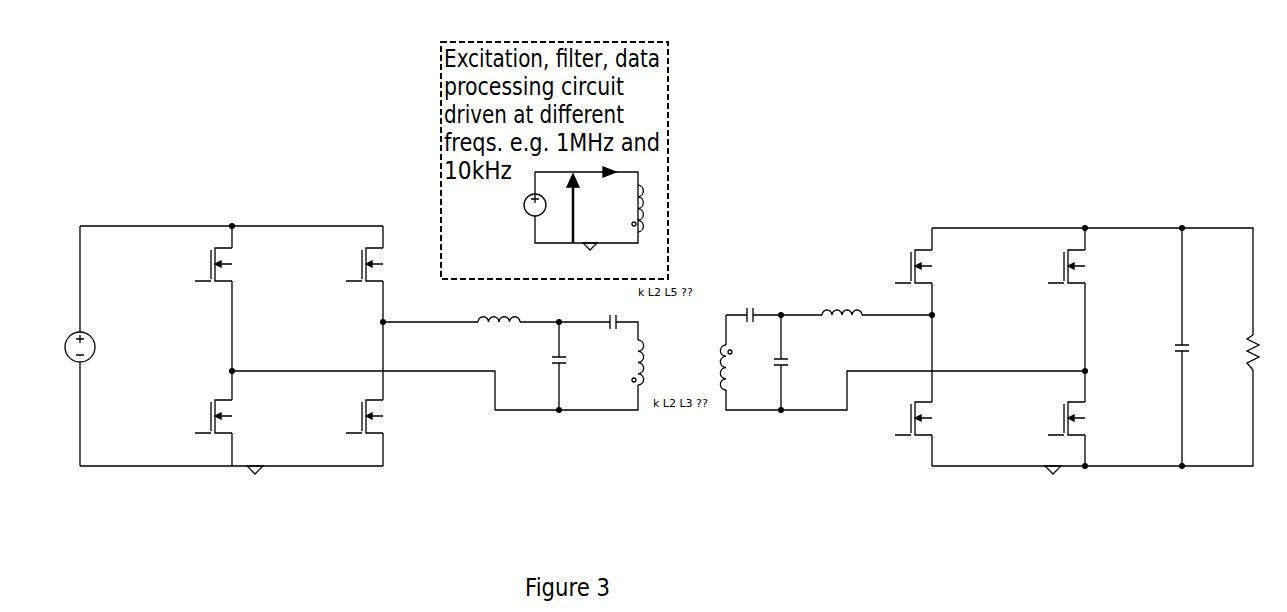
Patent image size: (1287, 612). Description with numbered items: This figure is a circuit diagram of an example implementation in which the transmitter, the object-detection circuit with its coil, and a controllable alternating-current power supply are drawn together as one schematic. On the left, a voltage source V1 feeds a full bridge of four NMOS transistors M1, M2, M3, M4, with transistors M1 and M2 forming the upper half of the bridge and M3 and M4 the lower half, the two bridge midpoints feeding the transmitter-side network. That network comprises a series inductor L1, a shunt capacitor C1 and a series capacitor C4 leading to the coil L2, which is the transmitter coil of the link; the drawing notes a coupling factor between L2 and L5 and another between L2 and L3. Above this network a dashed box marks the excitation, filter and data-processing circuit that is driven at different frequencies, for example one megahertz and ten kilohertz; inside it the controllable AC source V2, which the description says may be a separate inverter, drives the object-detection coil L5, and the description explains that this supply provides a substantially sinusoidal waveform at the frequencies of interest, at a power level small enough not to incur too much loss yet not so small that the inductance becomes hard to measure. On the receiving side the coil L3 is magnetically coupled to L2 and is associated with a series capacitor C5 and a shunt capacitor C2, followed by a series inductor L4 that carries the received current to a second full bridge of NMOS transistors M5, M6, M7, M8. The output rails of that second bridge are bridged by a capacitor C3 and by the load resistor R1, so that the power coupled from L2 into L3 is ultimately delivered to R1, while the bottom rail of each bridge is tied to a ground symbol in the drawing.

The DC voltage source V1 is at (86, 348).
The AC excitation voltage source V2 is at (542, 210).
The NMOS transistor M1 is at (233, 268).
The NMOS transistor M2 is at (384, 268).
The NMOS transistor M3 is at (233, 420).
The NMOS transistor M4 is at (384, 420).
The NMOS transistor M5 is at (933, 269).
The NMOS transistor M6 is at (1086, 269).
The NMOS transistor M7 is at (933, 421).
The NMOS transistor M8 is at (1086, 421).
The inductor L1 is at (499, 321).
The transmitter coil inductor L2 is at (646, 362).
The receiver coil inductor L3 is at (717, 367).
The inductor L4 is at (842, 316).
The excitation coil inductor L5 is at (646, 208).
The capacitor C1 is at (566, 363).
The capacitor C2 is at (788, 363).
The capacitor C3 is at (1189, 349).
The capacitor C4 is at (612, 322).
The capacitor C5 is at (751, 315).
The load resistor R1 is at (1262, 353).